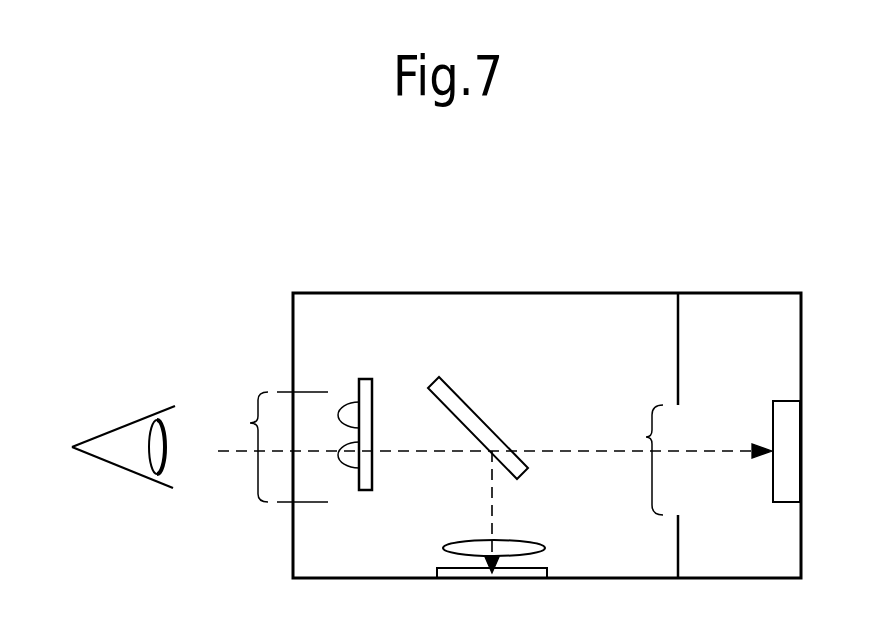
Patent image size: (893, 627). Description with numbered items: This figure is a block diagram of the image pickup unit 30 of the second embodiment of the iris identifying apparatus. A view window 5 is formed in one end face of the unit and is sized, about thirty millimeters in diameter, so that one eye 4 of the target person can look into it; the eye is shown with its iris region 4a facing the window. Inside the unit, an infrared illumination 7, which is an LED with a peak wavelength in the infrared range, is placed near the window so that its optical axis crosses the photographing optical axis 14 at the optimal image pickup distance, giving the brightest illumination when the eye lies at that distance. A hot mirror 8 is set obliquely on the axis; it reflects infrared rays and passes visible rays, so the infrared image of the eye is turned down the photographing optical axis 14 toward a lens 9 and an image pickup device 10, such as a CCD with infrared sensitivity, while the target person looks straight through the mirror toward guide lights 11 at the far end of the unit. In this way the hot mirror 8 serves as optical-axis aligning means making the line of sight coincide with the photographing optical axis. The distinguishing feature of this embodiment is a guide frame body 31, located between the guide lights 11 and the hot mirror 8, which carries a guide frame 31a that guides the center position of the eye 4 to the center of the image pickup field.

The image pickup unit 30 is at (554, 252).
The eye 4 is at (128, 423).
The fundus / pupil of eye 4a is at (170, 467).
The view window 5 is at (277, 447).
The infrared illumination 7 is at (345, 404).
The hot mirror 8 is at (468, 405).
The guide frame 31a is at (495, 460).
The photographing optical axis 14 is at (491, 488).
The lens 9 is at (543, 546).
The image pickup device 10 is at (548, 573).
The guide frame body 31 is at (677, 338).
The guide lights 11 is at (775, 400).